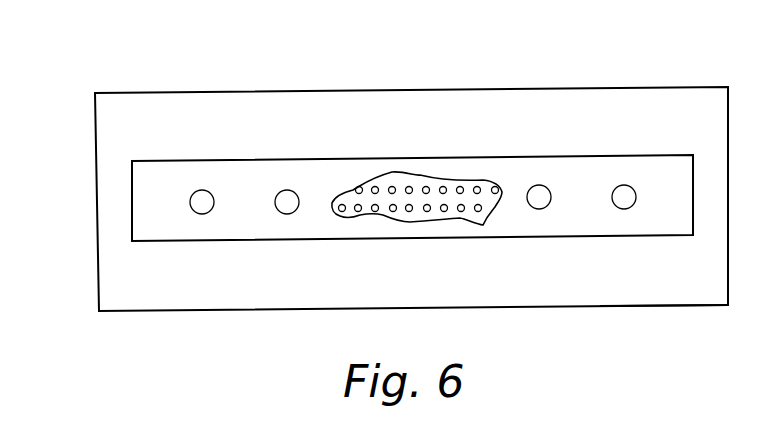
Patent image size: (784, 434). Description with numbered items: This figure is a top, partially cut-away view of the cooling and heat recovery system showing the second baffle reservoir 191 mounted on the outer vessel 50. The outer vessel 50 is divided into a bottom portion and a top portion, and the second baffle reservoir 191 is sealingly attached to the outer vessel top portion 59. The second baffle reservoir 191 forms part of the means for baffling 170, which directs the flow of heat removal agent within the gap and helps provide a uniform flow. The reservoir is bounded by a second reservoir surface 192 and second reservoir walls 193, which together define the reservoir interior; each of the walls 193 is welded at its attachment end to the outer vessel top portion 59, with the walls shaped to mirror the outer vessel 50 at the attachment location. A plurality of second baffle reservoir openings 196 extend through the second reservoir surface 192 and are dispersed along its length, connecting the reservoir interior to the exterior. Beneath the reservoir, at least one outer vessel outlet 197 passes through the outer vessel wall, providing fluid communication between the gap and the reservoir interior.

The outer vessel 50 is at (663, 86).
The outer vessel top portion 59 is at (713, 278).
The means for baffling 170 is at (246, 288).
The second baffle reservoir 191 is at (172, 288).
The second reservoir surface 192 is at (663, 223).
The second reservoir walls 193 is at (132, 201).
The second baffle reservoir opening 196 is at (202, 190).
The outer vessel outlet 197 is at (422, 187).